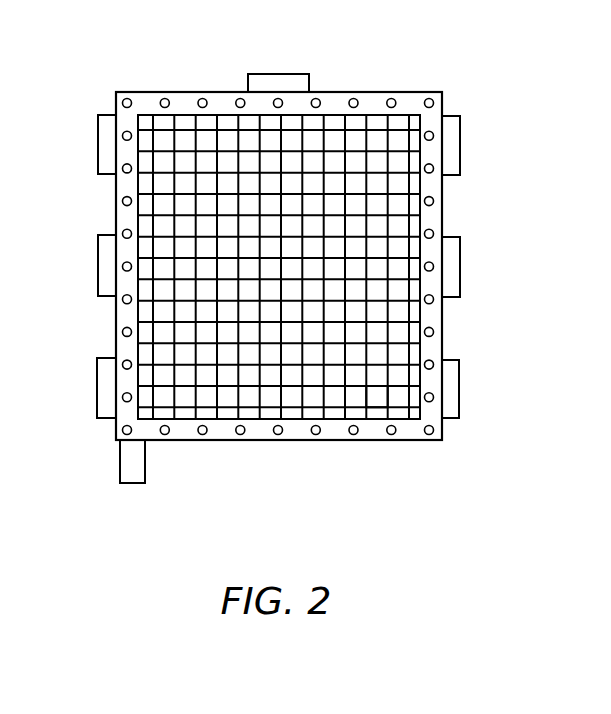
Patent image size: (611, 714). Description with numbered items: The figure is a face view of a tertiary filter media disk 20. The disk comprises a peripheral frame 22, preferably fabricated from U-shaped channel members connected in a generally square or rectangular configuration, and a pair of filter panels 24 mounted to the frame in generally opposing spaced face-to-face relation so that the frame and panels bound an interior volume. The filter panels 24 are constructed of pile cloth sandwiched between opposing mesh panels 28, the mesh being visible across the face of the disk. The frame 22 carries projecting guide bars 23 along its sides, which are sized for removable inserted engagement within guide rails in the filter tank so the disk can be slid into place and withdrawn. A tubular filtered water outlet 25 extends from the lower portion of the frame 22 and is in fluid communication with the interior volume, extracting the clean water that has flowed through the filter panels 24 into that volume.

The tertiary filter media disk 20 is at (446, 90).
The peripheral frame 22 is at (437, 213).
The projecting guide bars 23 is at (97, 143).
The filter panels 24 is at (349, 340).
The tubular filtered water outlet 25 is at (130, 485).
The mesh panels 28 is at (375, 397).